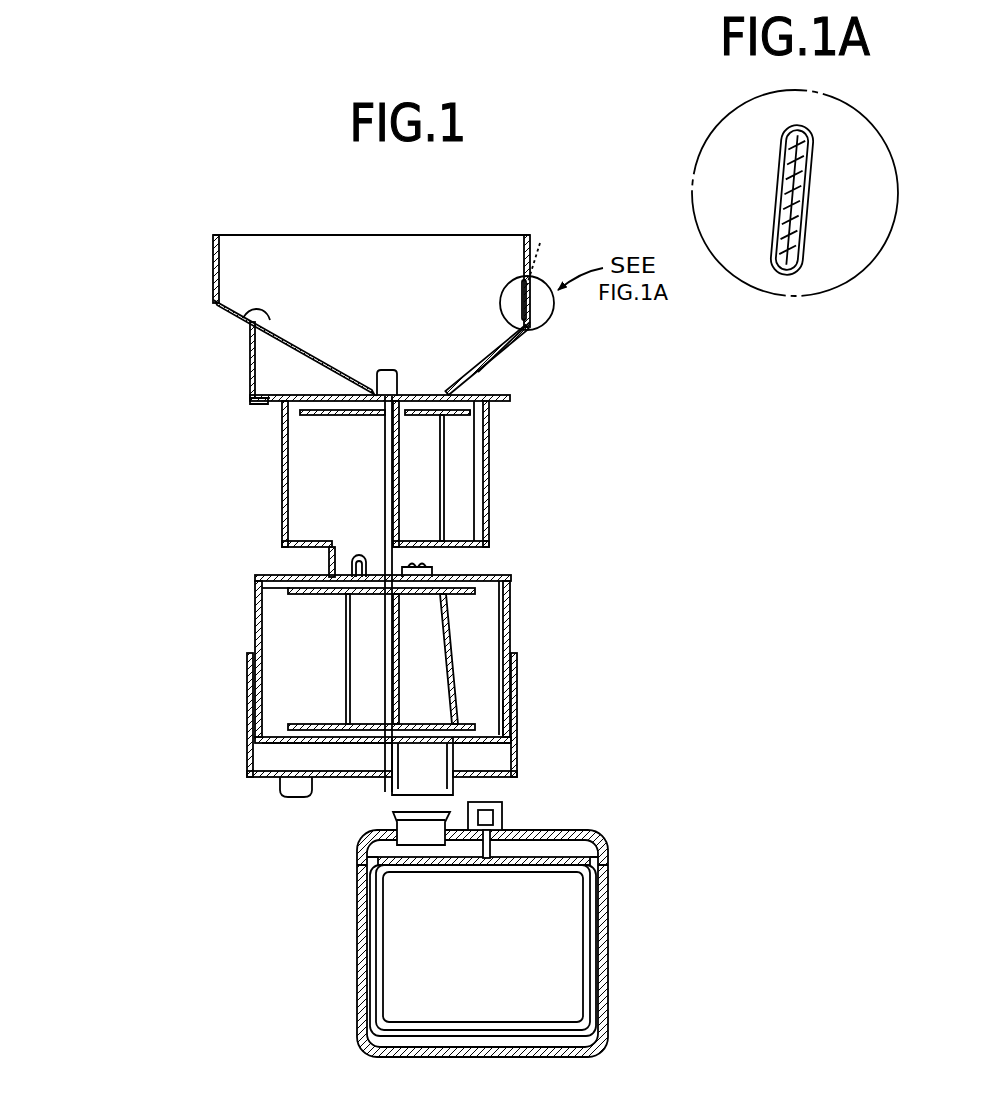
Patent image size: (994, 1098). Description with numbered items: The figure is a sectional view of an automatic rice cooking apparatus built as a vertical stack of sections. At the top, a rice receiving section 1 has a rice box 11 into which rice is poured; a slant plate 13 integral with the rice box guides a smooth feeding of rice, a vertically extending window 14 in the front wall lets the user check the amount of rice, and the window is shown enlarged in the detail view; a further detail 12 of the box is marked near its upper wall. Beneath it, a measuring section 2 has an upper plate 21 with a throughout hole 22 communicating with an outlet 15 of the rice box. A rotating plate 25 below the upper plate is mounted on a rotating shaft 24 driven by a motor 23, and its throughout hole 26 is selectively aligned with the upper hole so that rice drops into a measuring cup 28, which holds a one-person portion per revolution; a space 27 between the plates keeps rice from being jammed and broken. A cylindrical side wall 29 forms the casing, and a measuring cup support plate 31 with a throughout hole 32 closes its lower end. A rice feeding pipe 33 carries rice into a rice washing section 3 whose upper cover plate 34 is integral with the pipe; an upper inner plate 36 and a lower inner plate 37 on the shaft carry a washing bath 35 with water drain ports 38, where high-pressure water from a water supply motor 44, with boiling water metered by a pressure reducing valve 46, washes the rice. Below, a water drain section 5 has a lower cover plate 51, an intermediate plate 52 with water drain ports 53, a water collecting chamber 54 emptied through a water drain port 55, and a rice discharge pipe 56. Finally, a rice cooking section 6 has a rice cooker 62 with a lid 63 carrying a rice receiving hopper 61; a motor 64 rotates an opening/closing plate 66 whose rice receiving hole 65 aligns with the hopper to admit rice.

In FIG. 1, the rice receiving section 1 is at (205, 290).
In FIG. 1, the measuring section 2 is at (266, 478).
In FIG. 1, the rice washing section 3 is at (248, 609).
In FIG. 1, the water drain section 5 is at (247, 768).
In FIG. 1, the rice cooking section 6 is at (350, 982).
In FIG. 1, the rice box 11 is at (497, 352).
In FIG. 1, the hopper opening 12 is at (543, 248).
In FIG. 1, the slant plate 13 is at (246, 307).
In FIG. 1, the window 14 is at (528, 303).
In FIG. 1A, the window 14 is at (778, 240).
In FIG. 1, the outlet 15 is at (480, 380).
In FIG. 1, the upper plate 21 is at (500, 398).
In FIG. 1, the throughout hole 22 is at (270, 402).
In FIG. 1, the motor 23 is at (283, 414).
In FIG. 1, the rotating shaft 24 is at (346, 641).
In FIG. 1, the rotating plate 25 is at (300, 543).
In FIG. 1, the throughout hole 26 is at (490, 420).
In FIG. 1, the space 27 is at (427, 395).
In FIG. 1, the measuring cup 28 is at (442, 461).
In FIG. 1, the cylindrical side wall 29 is at (442, 506).
In FIG. 1, the measuring cup support plate 31 is at (442, 554).
In FIG. 1, the throughout hole 32 is at (283, 547).
In FIG. 1, the rice feeding pipe 33 is at (292, 597).
In FIG. 1, the upper cover plate 34 is at (505, 572).
In FIG. 1, the washing bath 35 is at (452, 643).
In FIG. 1, the upper inner plate 36 is at (467, 600).
In FIG. 1, the lower inner plate 37 is at (472, 722).
In FIG. 1, the water drain ports 38 is at (458, 660).
In FIG. 1, the water supply motor 44 is at (489, 514).
In FIG. 1, the pressure reducing valve 46 is at (432, 568).
In FIG. 1, the lower cover plate 51 is at (517, 722).
In FIG. 1, the intermediate plate 52 is at (480, 742).
In FIG. 1, the water drain ports 53 is at (256, 730).
In FIG. 1, the water collecting chamber 54 is at (290, 796).
In FIG. 1, the water drain port 55 is at (290, 773).
In FIG. 1, the rice discharge pipe 56 is at (392, 790).
In FIG. 1, the rice receiving hopper 61 is at (446, 812).
In FIG. 1, the rice cooker 62 is at (608, 985).
In FIG. 1, the lid 63 is at (598, 842).
In FIG. 1, the motor 64 is at (503, 813).
In FIG. 1, the rice receiving hole 65 is at (400, 872).
In FIG. 1, the rotating opening/closing plate 66 is at (596, 900).